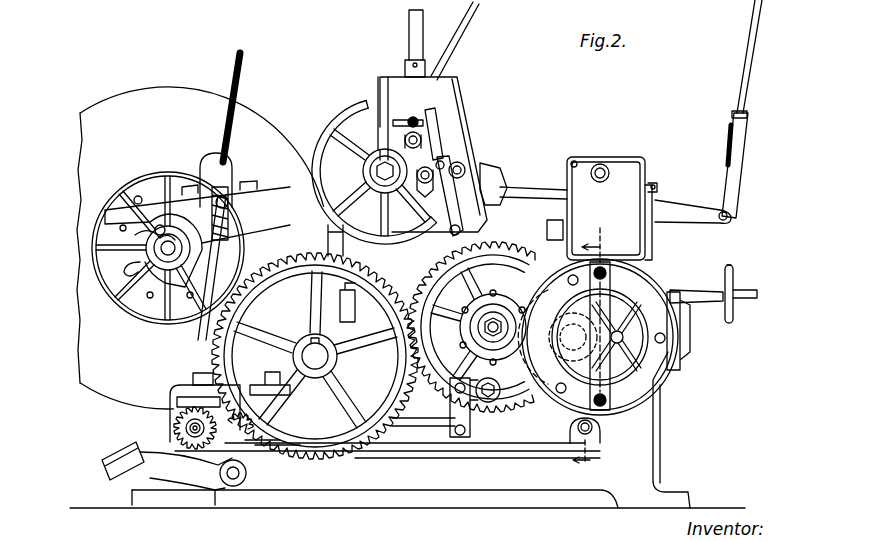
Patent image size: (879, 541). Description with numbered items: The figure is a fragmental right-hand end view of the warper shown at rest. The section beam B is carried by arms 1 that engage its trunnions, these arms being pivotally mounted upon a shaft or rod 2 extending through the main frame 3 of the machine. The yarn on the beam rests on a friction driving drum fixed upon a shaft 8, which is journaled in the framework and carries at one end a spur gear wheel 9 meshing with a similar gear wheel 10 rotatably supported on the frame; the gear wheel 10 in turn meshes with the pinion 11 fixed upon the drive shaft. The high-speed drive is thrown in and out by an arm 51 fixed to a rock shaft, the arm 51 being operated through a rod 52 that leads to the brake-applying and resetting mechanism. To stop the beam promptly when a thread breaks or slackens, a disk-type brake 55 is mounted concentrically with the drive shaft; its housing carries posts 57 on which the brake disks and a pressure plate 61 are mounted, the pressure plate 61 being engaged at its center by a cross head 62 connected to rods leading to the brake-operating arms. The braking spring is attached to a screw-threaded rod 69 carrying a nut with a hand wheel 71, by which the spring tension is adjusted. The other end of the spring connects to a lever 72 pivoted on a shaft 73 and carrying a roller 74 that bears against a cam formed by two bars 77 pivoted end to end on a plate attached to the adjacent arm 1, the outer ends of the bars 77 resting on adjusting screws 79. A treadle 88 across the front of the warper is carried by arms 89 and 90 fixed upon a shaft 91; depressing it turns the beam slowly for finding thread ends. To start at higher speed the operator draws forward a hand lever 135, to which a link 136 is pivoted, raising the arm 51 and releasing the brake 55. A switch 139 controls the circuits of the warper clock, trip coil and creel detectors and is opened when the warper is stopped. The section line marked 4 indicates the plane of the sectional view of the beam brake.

The section beam B is at (103, 105).
The arm 1 is at (288, 189).
The shaft or rod 2 is at (380, 167).
The main frame 3 is at (450, 90).
The section line 4- 4 is at (617, 244).
The shaft 8 is at (312, 353).
The spur gear wheel 9 is at (367, 450).
The gear wheel 10 is at (430, 270).
The pinion 11 is at (660, 316).
The arm 51 is at (693, 207).
The rod 52 is at (750, 70).
The brake 55 is at (625, 410).
The post 57 is at (573, 263).
The pressure plate 61 is at (665, 295).
The cross head 62 is at (603, 292).
The screw-threaded rod 69 is at (755, 290).
The hand wheel 71 is at (735, 267).
The lever 72 is at (507, 163).
The shaft 73 is at (452, 236).
The roller 74 is at (463, 165).
The bar 77 is at (440, 127).
The adjusting screw 79 is at (394, 78).
The treadle 88 is at (127, 450).
The arm 89 is at (638, 6).
The arm 90 is at (181, 484).
The shaft 91 is at (233, 498).
The hand lever 135 is at (423, 16).
The link 136 is at (467, 35).
The switch 139 is at (622, 165).